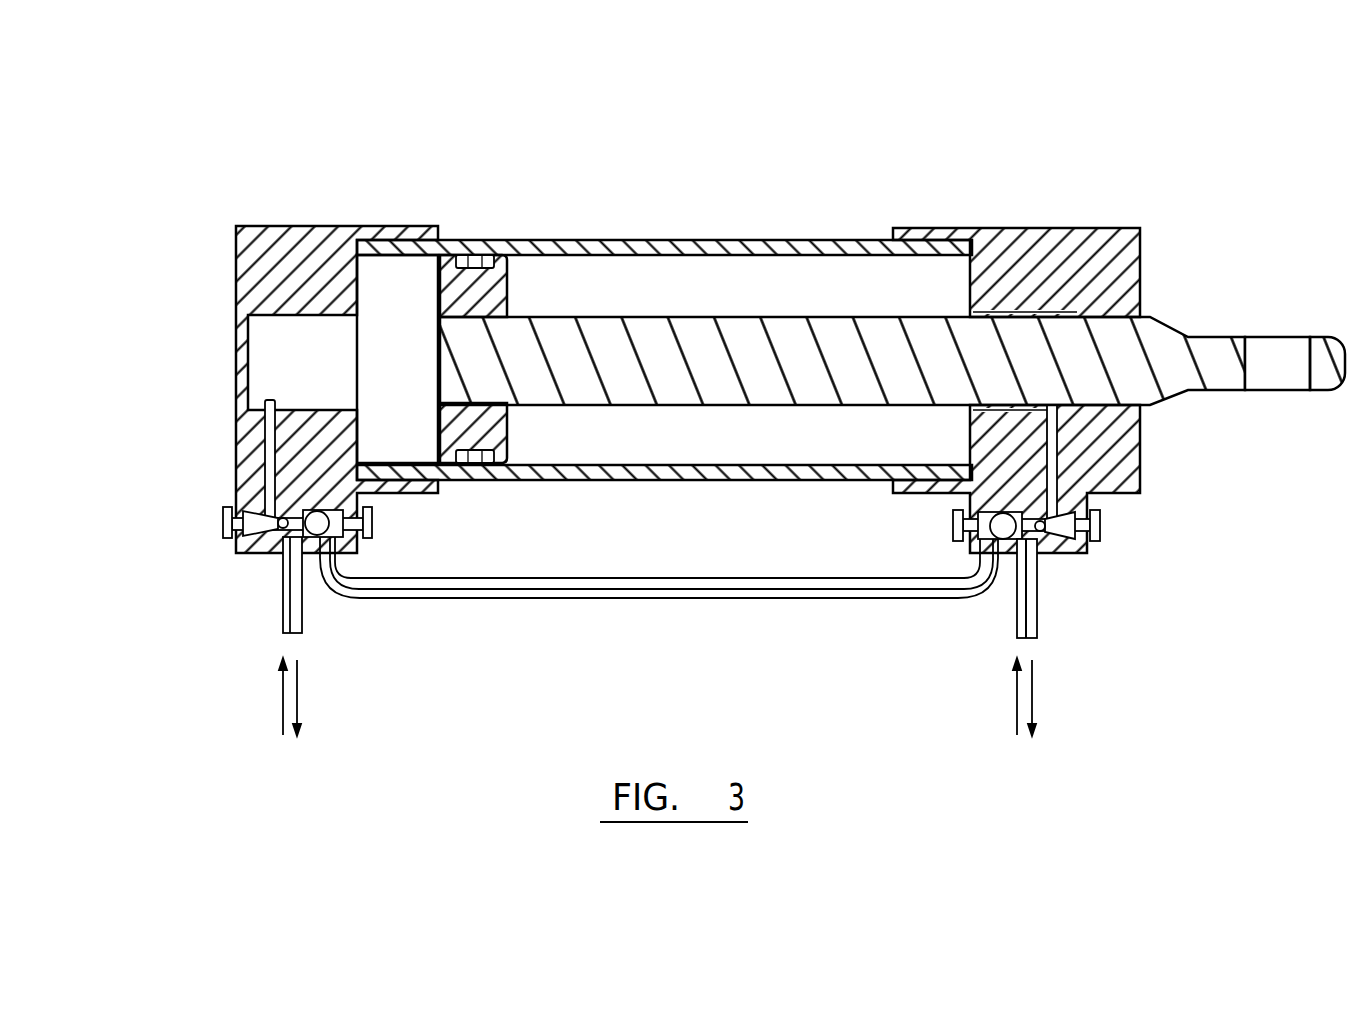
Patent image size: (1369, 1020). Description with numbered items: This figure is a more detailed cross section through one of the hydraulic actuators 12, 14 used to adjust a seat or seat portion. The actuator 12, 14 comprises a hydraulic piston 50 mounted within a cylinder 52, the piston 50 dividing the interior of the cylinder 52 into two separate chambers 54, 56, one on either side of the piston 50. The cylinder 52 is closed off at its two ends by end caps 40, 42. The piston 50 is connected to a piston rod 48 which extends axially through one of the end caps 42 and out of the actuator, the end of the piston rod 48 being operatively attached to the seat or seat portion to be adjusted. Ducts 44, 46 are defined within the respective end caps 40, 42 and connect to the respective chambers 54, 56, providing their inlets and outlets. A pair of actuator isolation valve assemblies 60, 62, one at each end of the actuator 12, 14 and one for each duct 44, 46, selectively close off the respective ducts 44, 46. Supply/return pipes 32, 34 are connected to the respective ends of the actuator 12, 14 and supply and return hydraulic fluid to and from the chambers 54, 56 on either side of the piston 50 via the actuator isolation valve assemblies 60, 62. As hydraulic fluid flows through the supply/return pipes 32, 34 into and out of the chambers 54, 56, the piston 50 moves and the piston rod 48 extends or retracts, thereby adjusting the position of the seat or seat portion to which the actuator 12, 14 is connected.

The hydraulic actuator 12 is at (721, 394).
The hydraulic actuator 14 is at (445, 177).
The supply/return pipe 32 is at (676, 636).
The supply/return pipe 34 is at (282, 603).
The end cap 40 is at (269, 302).
The end cap 42 is at (1086, 305).
The duct 44 is at (265, 443).
The duct 46 is at (1050, 455).
The piston rod 48 is at (828, 318).
The hydraulic piston 50 is at (483, 285).
The cylinder 52 is at (722, 250).
The chamber 54 is at (412, 362).
The chamber 56 is at (675, 298).
The actuator isolation valve assembly 60 is at (243, 550).
The actuator isolation valve assembly 62 is at (1087, 555).